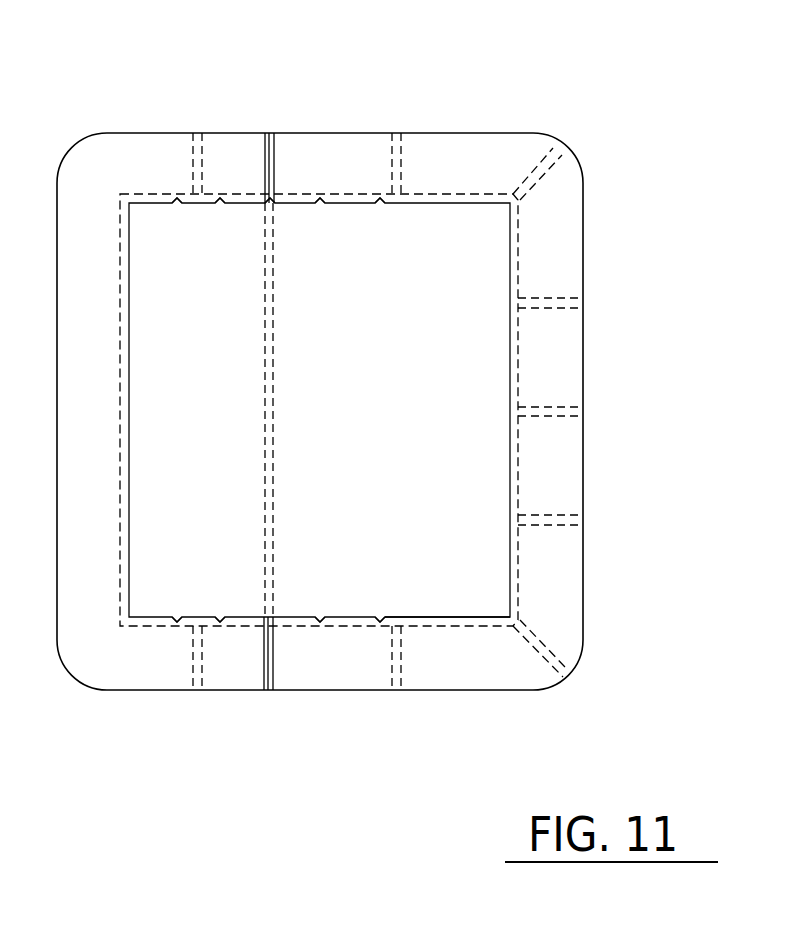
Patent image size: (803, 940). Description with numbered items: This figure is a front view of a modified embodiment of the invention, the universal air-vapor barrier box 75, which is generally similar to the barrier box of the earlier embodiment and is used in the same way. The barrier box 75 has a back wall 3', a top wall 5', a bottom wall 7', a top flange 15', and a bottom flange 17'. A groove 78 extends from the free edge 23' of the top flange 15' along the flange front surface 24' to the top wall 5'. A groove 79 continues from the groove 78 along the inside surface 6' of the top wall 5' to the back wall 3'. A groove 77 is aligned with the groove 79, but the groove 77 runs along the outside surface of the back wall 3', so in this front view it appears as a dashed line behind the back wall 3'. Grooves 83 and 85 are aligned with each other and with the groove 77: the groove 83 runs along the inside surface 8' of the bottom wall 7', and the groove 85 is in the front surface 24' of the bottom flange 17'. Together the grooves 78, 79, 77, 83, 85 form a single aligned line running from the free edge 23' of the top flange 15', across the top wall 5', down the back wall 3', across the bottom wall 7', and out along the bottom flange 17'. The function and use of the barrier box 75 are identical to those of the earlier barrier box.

The universal air-vapor barrier box 75 is at (583, 390).
The back wall 3' is at (319, 410).
The top wall 5' is at (205, 241).
The inside surface of the top wall 6' is at (375, 247).
The bottom wall 7' is at (351, 568).
The inside surface of the bottom wall 8' is at (447, 567).
The top flange 15' is at (482, 127).
The bottom flange 17' is at (453, 708).
The free edge of the top flange 23' is at (331, 118).
The flange front surface 24' is at (393, 392).
The groove 77 is at (268, 314).
The groove 78 is at (272, 163).
The groove 79 is at (267, 205).
The groove 83 is at (267, 617).
The groove 85 is at (266, 660).